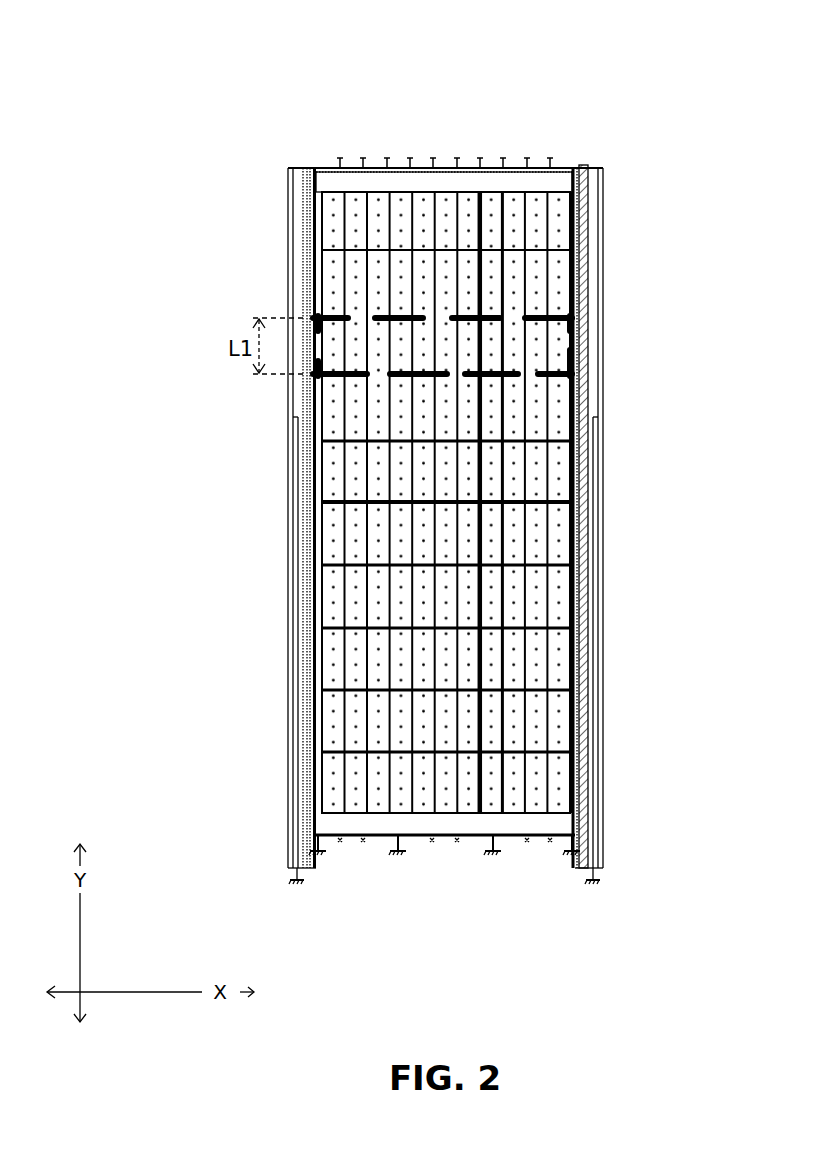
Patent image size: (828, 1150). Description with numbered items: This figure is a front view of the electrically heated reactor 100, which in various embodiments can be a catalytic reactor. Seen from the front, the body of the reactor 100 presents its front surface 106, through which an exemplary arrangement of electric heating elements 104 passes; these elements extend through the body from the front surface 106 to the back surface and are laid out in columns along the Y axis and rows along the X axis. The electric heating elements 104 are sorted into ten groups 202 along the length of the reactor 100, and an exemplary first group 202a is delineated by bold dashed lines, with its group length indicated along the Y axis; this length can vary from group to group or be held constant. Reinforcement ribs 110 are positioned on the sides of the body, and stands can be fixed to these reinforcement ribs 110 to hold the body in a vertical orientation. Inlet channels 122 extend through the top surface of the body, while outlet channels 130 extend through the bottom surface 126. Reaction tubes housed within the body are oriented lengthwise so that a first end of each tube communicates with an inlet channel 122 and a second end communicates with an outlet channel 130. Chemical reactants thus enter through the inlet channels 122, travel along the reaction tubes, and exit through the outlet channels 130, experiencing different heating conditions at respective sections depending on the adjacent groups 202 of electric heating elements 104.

The reactor 100 is at (270, 49).
The electrical heating elements 104 is at (320, 211).
The front surface 106 is at (331, 176).
The reinforcement ribs 110 is at (600, 277).
The inlet channels 122 is at (554, 156).
The bottom surface 126 is at (466, 838).
The outlet channels 130 is at (428, 848).
The groups 202 is at (576, 192).
The first group 202a is at (578, 342).